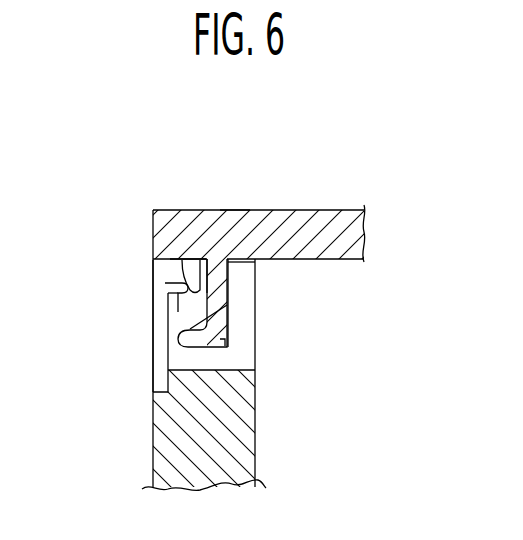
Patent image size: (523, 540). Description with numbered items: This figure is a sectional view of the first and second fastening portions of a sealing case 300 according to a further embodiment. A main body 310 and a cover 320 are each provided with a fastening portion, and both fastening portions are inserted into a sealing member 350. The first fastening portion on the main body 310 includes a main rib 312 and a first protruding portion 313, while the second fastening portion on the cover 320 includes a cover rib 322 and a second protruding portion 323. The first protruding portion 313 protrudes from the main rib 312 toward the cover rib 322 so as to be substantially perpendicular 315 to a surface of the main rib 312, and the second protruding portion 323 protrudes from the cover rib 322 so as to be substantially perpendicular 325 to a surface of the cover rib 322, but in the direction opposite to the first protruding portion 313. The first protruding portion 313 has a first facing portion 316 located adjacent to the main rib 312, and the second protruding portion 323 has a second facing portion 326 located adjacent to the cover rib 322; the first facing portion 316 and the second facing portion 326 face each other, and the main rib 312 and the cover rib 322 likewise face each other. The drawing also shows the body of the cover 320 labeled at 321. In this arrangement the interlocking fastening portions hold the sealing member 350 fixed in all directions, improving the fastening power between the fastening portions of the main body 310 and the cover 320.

The sealing case 300 is at (360, 108).
The main body 310 is at (270, 421).
The main rib 312 is at (175, 328).
The first protruding portion 313 is at (163, 259).
The perpendicular orientation of first protruding portion 315 is at (152, 279).
The first facing portion 316 is at (182, 260).
The cover 320 is at (325, 200).
The body of second member 321 is at (232, 217).
The cover rib 322 is at (236, 266).
The second protruding portion 323 is at (200, 340).
The perpendicular orientation of second protruding portion 325 is at (243, 342).
The second facing portion 326 is at (206, 312).
The sealing member 350 is at (124, 299).